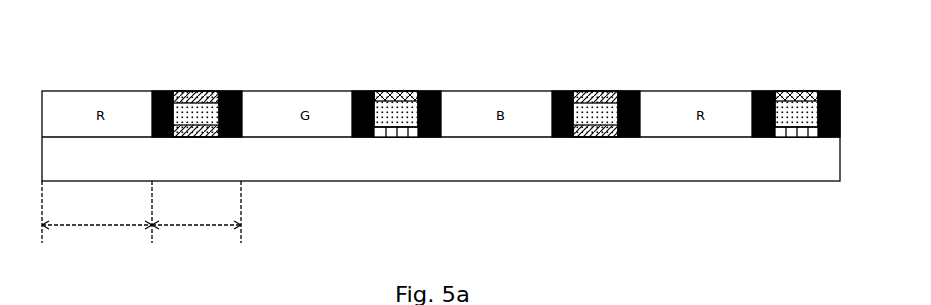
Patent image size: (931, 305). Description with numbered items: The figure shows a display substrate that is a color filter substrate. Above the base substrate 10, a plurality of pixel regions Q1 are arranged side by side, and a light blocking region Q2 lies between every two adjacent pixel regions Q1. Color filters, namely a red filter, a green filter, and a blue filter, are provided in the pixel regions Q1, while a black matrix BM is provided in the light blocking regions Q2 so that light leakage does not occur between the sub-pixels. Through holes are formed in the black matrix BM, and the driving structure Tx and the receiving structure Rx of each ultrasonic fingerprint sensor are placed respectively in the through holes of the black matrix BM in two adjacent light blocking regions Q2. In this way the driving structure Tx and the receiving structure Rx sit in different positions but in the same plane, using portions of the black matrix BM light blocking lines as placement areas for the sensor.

The base substrate 10 is at (749, 163).
The black matrix BM is at (158, 91).
The driving structure Tx is at (194, 91).
The receiving structure Rx is at (397, 91).
The pixel region Q1 is at (97, 212).
The light blocking region Q2 is at (196, 212).